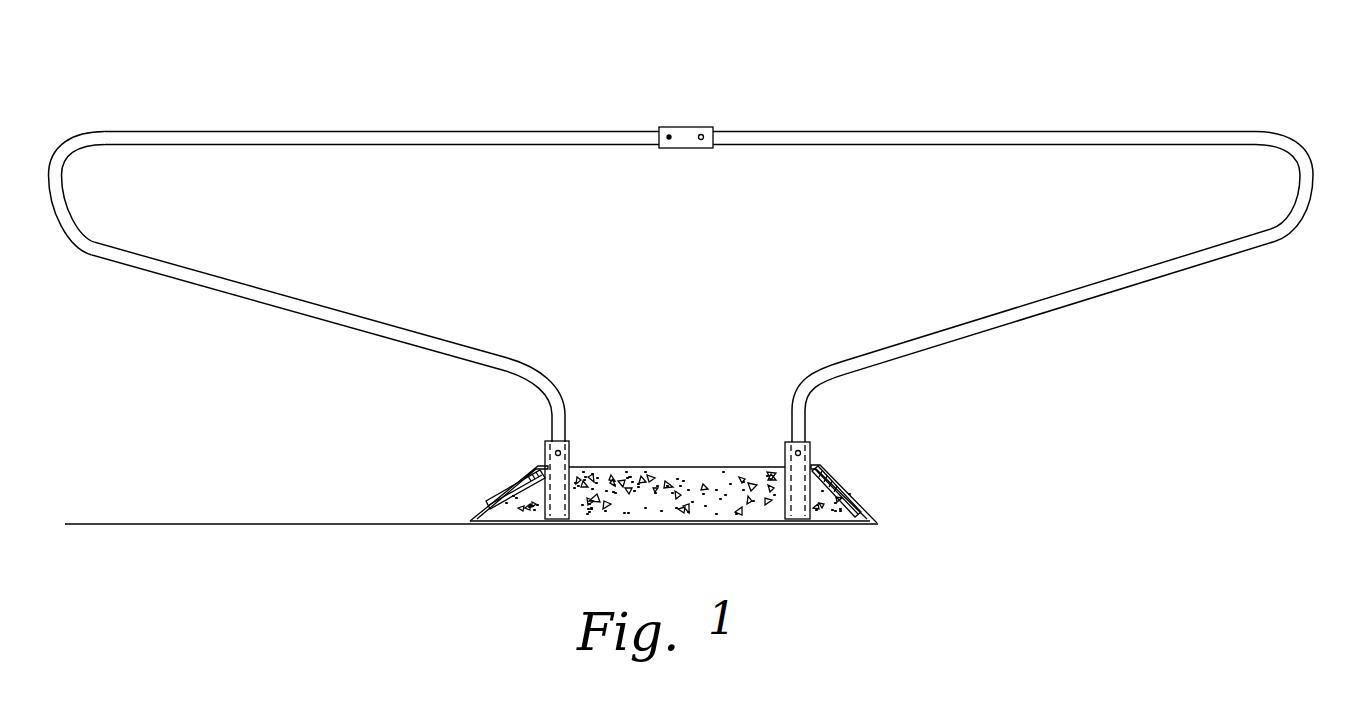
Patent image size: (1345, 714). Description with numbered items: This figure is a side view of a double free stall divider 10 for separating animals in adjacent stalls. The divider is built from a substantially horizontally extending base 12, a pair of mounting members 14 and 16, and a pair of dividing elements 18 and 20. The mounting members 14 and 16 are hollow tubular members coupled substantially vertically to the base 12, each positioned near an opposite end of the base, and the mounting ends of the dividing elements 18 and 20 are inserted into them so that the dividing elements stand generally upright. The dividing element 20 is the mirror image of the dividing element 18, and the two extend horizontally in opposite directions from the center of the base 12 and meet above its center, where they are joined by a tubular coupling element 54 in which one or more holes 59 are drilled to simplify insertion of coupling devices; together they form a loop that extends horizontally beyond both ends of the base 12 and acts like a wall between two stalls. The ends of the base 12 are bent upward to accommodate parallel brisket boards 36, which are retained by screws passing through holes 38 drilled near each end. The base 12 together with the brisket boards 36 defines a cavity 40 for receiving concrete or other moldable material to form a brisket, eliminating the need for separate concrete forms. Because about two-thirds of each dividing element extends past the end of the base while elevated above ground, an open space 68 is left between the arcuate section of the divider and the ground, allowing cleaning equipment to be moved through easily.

The free stall divider 10 is at (682, 230).
The base 12 is at (520, 527).
The mounting member 14 is at (555, 452).
The mounting member 16 is at (801, 453).
The dividing element 18 is at (58, 156).
The dividing element 20 is at (1307, 152).
The brisket board 36 is at (837, 488).
The hole 38 is at (868, 507).
The cavity 40 is at (660, 470).
The tubular coupling element 54 is at (682, 127).
The hole 59 is at (701, 146).
The open space 68 is at (348, 449).